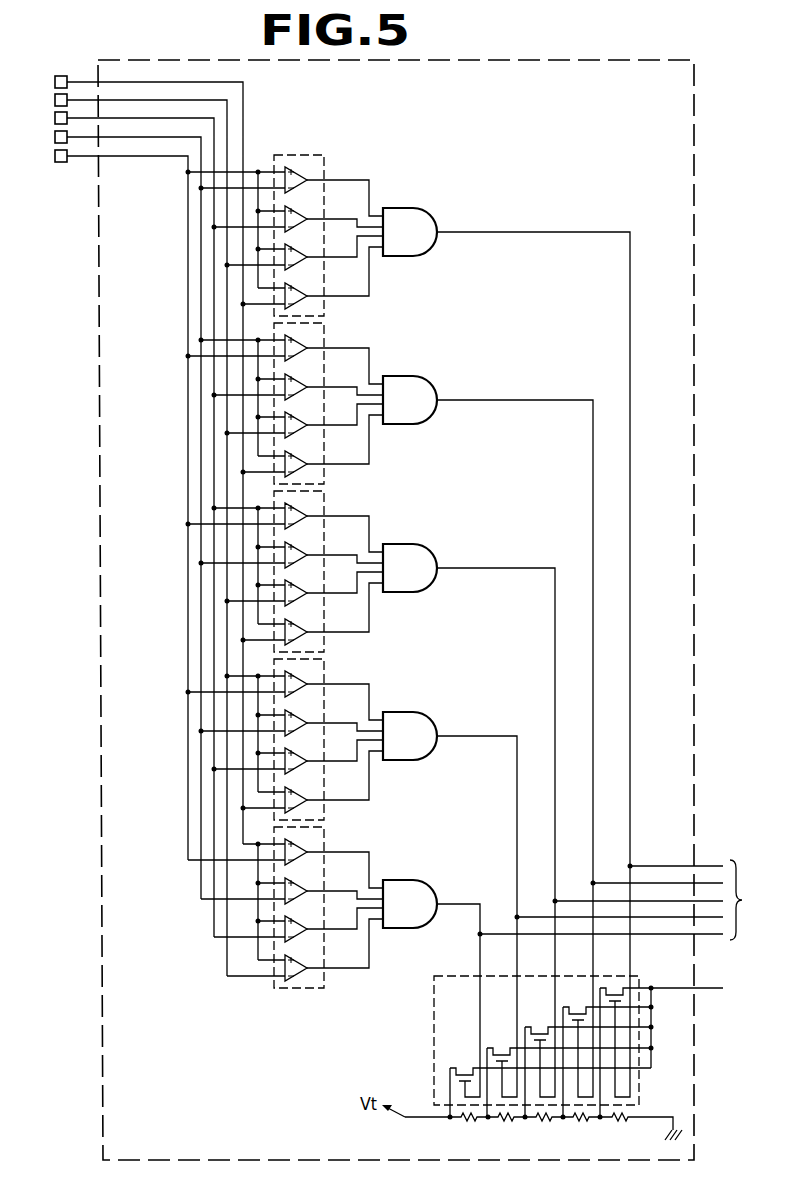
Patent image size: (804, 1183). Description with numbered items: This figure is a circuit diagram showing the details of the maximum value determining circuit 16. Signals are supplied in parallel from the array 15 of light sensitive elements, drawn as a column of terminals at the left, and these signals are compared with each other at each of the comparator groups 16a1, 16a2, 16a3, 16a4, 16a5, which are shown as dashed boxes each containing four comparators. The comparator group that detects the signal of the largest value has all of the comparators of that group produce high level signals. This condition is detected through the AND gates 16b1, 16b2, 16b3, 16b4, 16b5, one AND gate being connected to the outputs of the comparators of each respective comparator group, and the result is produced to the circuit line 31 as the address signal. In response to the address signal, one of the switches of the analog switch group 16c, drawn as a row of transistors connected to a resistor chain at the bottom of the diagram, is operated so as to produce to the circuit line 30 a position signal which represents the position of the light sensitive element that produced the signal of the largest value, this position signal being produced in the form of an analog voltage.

The array of light sensitive elements 15 is at (61, 76).
The maximum value determining circuit 16 is at (694, 331).
The comparator group 16a1 is at (327, 158).
The comparator group 16a2 is at (325, 335).
The comparator group 16a3 is at (325, 503).
The comparator group 16a4 is at (325, 671).
The comparator group 16a5 is at (325, 839).
The AND gate 16b1 is at (430, 214).
The AND gate 16b2 is at (430, 382).
The AND gate 16b3 is at (430, 548).
The AND gate 16b4 is at (430, 716).
The AND gate 16b5 is at (430, 884).
The analog switch group 16c is at (641, 978).
The circuit line 30 is at (712, 987).
The circuit line 31 is at (621, 900).